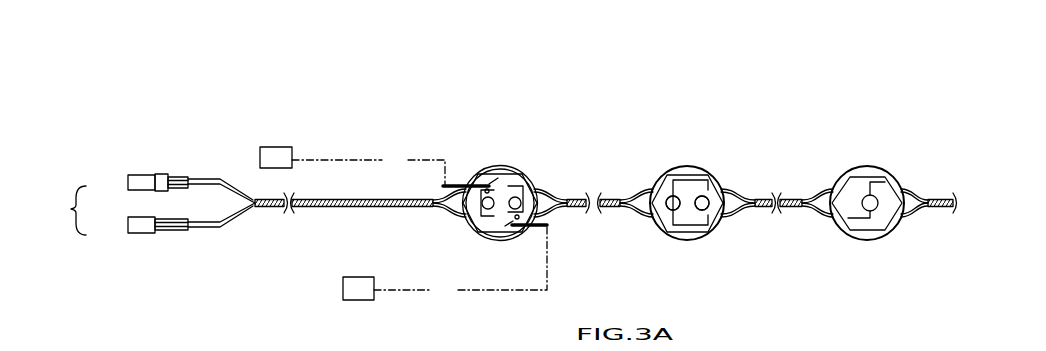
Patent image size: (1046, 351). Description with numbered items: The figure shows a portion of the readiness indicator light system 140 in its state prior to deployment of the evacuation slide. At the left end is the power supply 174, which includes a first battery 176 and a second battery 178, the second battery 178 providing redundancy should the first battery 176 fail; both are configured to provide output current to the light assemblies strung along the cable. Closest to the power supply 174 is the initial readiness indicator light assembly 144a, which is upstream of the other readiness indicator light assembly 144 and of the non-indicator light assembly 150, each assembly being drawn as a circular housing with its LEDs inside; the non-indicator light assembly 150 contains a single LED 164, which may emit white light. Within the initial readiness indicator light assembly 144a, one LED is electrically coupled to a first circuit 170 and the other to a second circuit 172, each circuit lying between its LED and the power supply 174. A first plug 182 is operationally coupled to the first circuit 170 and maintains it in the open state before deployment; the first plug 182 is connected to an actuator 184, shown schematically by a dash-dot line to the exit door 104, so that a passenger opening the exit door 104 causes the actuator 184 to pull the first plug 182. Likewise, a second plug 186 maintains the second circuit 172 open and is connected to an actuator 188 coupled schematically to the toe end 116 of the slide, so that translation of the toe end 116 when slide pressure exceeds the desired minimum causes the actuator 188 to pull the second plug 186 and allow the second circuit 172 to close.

The light system 140 is at (211, 136).
The exit door 104 is at (276, 157).
The toe end 116 is at (358, 288).
The initial readiness indicator light assembly 144a is at (532, 161).
The readiness indicator light assembly 144 is at (715, 171).
The non-indicator light assembly 150 is at (899, 164).
The LED 164 is at (867, 199).
The first circuit 170 is at (498, 171).
The second circuit 172 is at (505, 228).
The power supply 174 is at (71, 209).
The first battery 176 is at (128, 184).
The second battery 178 is at (128, 225).
The first plug 182 is at (466, 184).
The actuator 184 is at (368, 168).
The second plug 186 is at (548, 227).
The actuator 188 is at (460, 263).